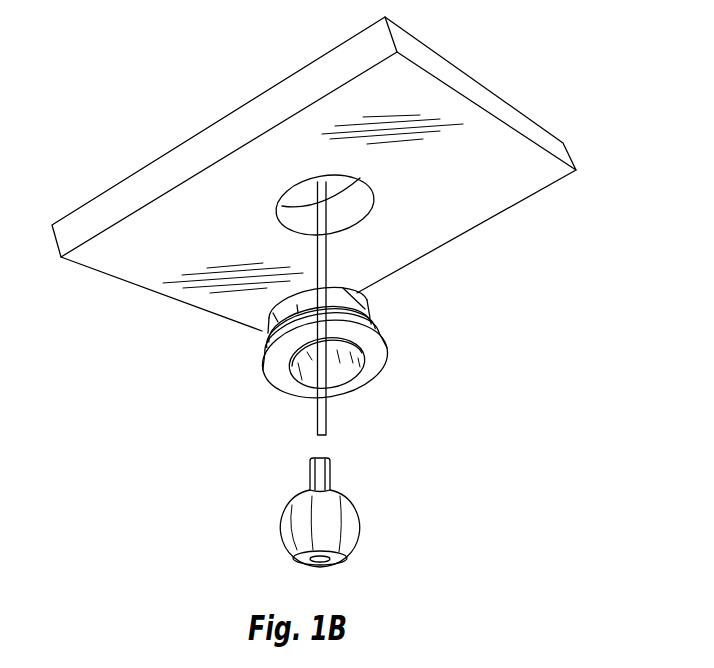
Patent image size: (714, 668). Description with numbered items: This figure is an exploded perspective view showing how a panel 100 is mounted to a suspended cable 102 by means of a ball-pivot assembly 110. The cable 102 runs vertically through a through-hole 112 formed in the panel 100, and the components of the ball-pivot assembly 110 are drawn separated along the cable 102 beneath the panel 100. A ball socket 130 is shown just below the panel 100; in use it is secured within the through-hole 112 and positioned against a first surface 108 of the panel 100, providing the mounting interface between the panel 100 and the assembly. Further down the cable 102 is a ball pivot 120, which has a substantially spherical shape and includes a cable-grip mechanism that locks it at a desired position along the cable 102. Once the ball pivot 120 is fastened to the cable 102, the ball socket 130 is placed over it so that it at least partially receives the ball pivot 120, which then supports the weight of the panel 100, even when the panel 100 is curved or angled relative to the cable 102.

The panel 100 is at (538, 133).
The first surface 108 is at (475, 191).
The through-hole 112 is at (347, 207).
The ball-pivot assembly 110 is at (282, 374).
The ball socket 130 is at (388, 343).
The suspended cable 102 is at (331, 417).
The ball pivot 120 is at (359, 524).